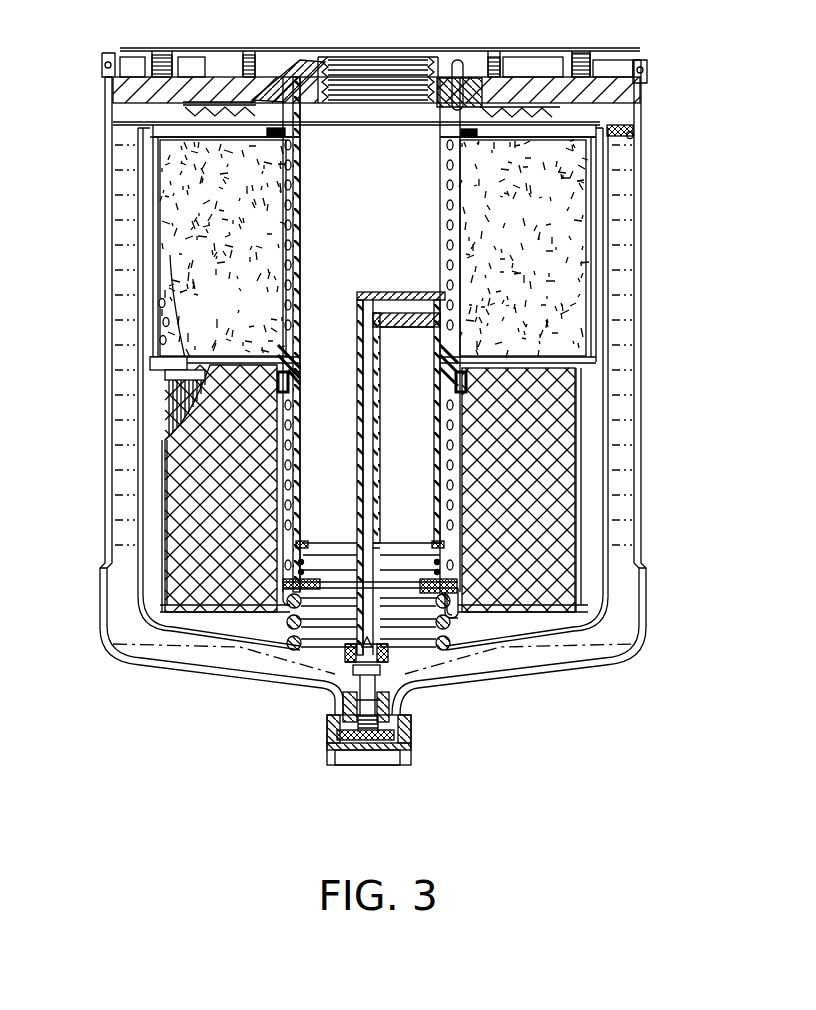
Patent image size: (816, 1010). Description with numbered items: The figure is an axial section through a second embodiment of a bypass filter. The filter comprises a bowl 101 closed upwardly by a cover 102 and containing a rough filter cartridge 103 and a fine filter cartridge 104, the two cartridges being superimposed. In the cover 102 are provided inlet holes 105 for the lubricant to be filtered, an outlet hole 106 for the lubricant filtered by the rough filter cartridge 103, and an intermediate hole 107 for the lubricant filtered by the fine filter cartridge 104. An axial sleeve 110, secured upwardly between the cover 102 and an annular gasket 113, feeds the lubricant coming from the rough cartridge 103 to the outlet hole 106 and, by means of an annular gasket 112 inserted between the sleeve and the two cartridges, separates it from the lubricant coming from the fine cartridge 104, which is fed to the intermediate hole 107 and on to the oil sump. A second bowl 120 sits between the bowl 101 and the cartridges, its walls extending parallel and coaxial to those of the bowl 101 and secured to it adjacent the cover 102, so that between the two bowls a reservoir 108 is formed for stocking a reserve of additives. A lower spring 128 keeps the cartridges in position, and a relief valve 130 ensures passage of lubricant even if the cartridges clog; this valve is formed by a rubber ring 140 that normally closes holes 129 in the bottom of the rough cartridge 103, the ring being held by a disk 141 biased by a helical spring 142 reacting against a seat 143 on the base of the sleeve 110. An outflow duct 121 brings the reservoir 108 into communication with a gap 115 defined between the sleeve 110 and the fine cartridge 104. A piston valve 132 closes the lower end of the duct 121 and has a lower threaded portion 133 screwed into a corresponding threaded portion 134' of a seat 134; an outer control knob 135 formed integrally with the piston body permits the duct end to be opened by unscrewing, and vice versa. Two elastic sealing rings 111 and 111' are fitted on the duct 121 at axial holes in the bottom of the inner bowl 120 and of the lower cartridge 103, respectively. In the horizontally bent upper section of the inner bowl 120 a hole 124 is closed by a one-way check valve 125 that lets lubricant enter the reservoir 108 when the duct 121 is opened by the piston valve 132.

The bowl 101 is at (107, 190).
The cover 102 is at (132, 88).
The rough filter cartridge 103 is at (183, 487).
The fine filter cartridge 104 is at (173, 280).
The inlet holes 105 is at (212, 90).
The outlet hole 106 is at (322, 80).
The intermediate hole 107 is at (457, 62).
The reservoir 108 is at (625, 352).
The axial sleeve 110 is at (302, 197).
The elastic sealing ring 111 is at (318, 688).
The elastic sealing ring 111' is at (374, 473).
The annular gasket 112 is at (302, 368).
The annular gasket 113 is at (288, 133).
The gap 115 is at (450, 268).
The second bowl 120 is at (607, 233).
The outflow duct 121 is at (385, 452).
The hole 124 is at (615, 127).
The one-way check valve 125 is at (630, 132).
The lower spring 128 is at (447, 620).
The holes 129 is at (437, 595).
The relief valve 130 is at (447, 556).
The piston valve 132 is at (395, 698).
The lower threaded portion 133 is at (363, 740).
The seat 134 is at (318, 729).
The threaded portion 134' is at (327, 764).
The outer control knob 135 is at (405, 765).
The rubber ring 140 is at (300, 583).
The disk 141 is at (285, 582).
The helical spring 142 is at (415, 555).
The seat 143 is at (290, 547).